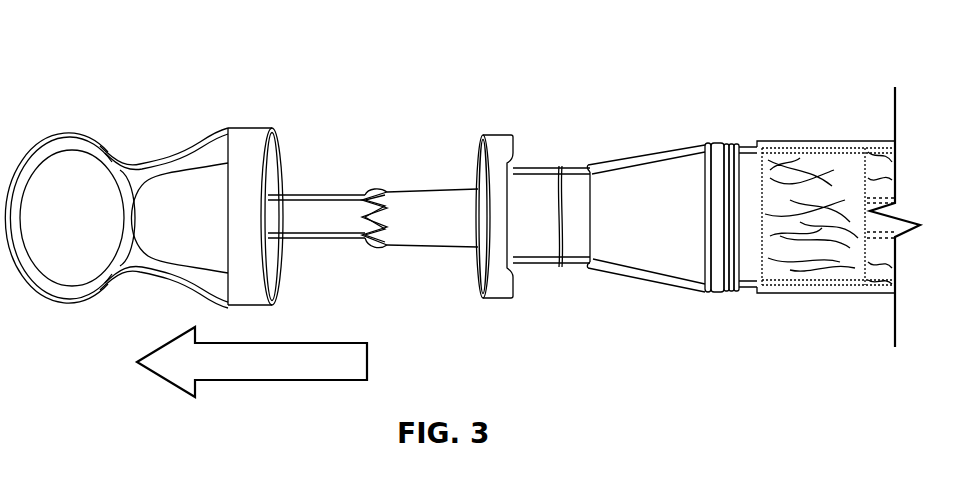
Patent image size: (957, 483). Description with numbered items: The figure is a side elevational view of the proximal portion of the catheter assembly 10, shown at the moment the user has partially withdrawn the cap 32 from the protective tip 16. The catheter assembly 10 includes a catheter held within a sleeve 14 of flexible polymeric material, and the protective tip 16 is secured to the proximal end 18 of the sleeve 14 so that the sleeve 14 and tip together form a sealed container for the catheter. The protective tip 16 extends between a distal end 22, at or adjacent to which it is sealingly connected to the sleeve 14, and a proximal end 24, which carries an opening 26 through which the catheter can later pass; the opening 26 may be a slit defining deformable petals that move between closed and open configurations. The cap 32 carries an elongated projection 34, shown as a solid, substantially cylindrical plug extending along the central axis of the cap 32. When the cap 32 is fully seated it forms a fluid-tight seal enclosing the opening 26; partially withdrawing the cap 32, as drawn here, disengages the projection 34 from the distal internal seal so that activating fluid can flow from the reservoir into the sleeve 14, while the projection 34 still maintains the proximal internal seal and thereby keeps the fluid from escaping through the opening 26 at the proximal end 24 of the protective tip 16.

The catheter assembly 10 is at (766, 68).
The sleeve 14 is at (872, 305).
The protective tip 16 is at (648, 142).
The proximal end of the sleeve 18 is at (785, 295).
The distal end of the protective tip 22 is at (840, 150).
The proximal end of the protective tip 24 is at (413, 192).
The opening 26 is at (378, 245).
The cap 32 is at (181, 153).
The projection 34 is at (303, 193).